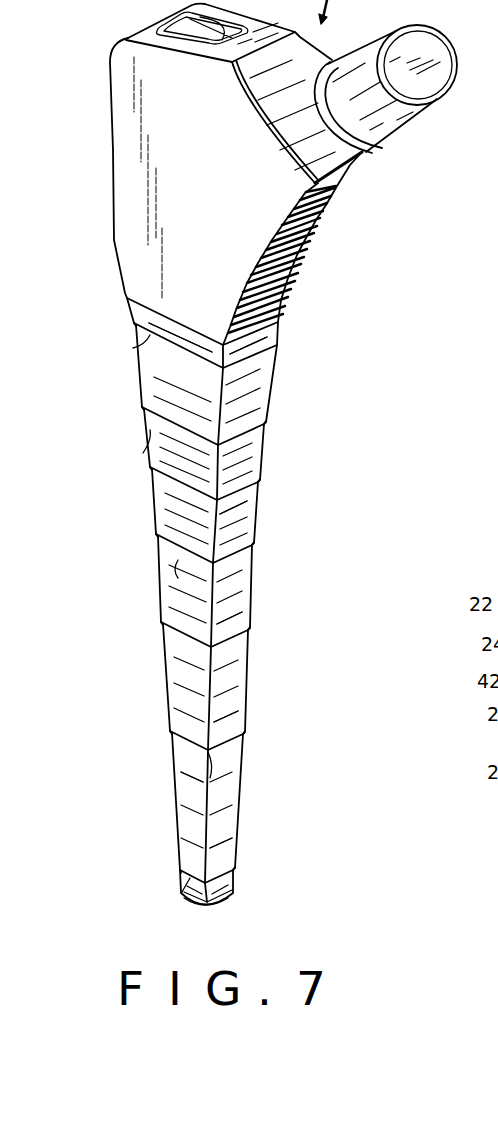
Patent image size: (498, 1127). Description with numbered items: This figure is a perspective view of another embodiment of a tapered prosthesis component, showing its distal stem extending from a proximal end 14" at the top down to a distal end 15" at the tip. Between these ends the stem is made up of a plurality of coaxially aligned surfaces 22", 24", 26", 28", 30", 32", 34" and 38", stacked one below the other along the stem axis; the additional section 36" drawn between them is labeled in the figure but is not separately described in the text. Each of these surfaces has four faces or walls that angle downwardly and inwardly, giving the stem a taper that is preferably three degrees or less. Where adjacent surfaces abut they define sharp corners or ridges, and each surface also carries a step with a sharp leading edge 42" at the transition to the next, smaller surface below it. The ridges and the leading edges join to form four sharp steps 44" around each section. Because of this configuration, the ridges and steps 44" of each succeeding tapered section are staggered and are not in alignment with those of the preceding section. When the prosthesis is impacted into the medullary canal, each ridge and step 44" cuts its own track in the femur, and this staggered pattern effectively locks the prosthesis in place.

The proximal end 14 is at (124, 300).
The distal end 15 is at (225, 910).
The coaxially aligned surface 22 is at (277, 332).
The coaxially aligned surface 24 is at (268, 365).
The coaxially aligned surface 26 is at (268, 398).
The coaxially aligned surface 28 is at (260, 460).
The coaxially aligned surface 30 is at (237, 533).
The coaxially aligned surface 32 is at (233, 612).
The coaxially aligned surface 34 is at (228, 678).
The stem section 36 is at (222, 804).
The coaxially aligned surface 38 is at (235, 893).
The step with sharp leading edge 42 is at (133, 348).
The sharp steps 44 is at (140, 405).